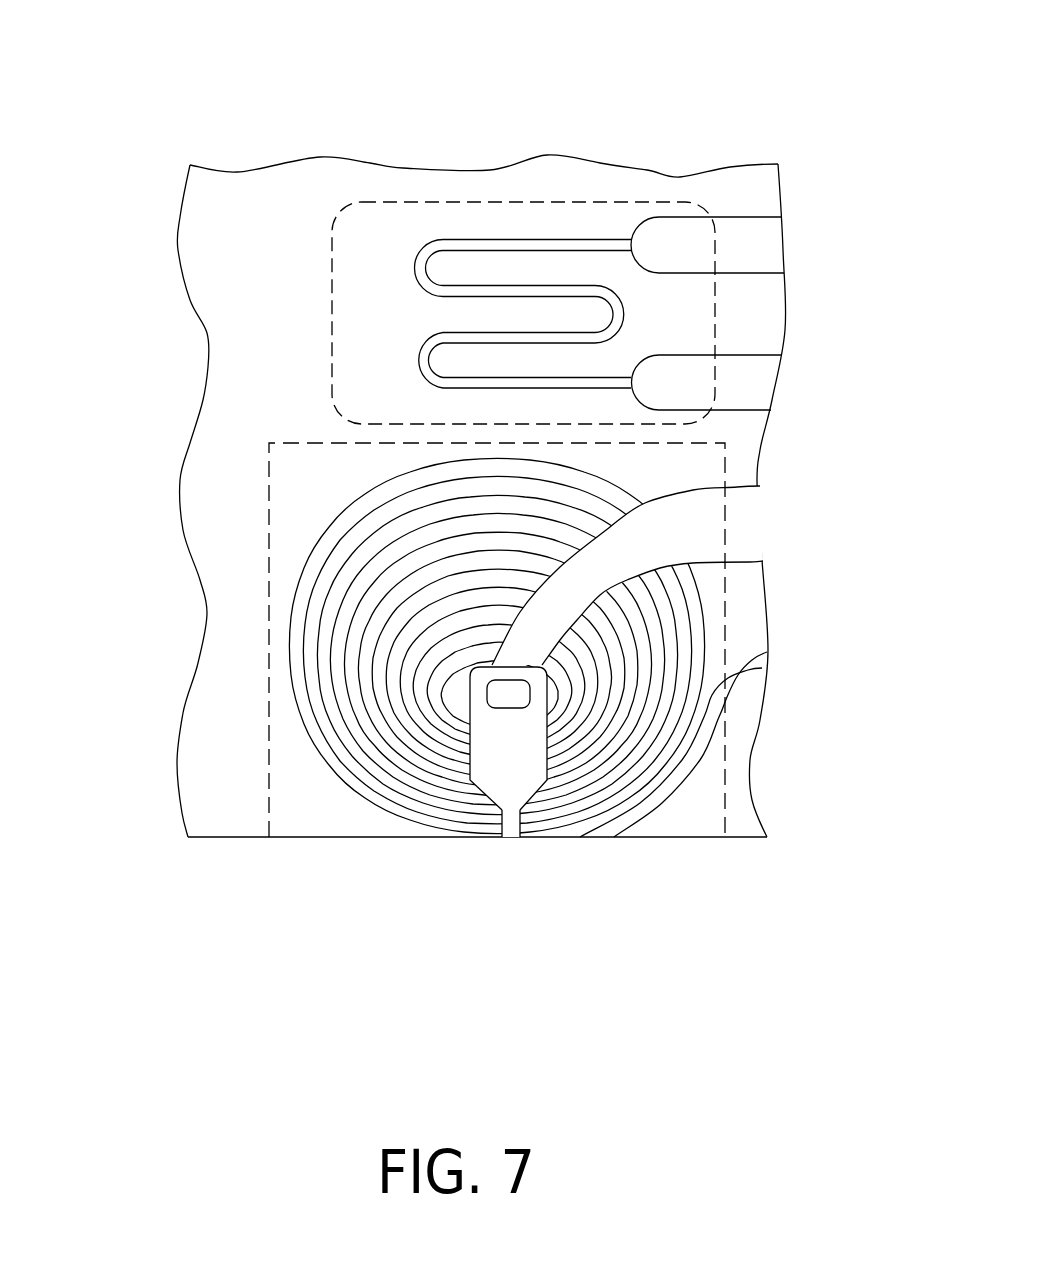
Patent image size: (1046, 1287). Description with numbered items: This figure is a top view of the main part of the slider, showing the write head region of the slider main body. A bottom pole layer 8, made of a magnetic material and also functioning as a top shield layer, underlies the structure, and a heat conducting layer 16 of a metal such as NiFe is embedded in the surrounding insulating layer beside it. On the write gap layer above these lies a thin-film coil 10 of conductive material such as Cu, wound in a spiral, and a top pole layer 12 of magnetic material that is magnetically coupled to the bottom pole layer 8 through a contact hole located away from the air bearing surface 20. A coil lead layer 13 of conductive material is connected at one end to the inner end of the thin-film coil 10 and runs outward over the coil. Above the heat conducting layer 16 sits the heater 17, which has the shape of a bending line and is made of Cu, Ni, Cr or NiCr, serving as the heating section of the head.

The bottom pole layer 8 is at (267, 697).
The thin-film coil 10 is at (347, 778).
The top pole layer 12 is at (490, 785).
The coil lead layer 13 is at (740, 527).
The heat conducting layer 16 is at (409, 200).
The heater 17 is at (523, 238).
The air bearing surface 20 is at (511, 845).